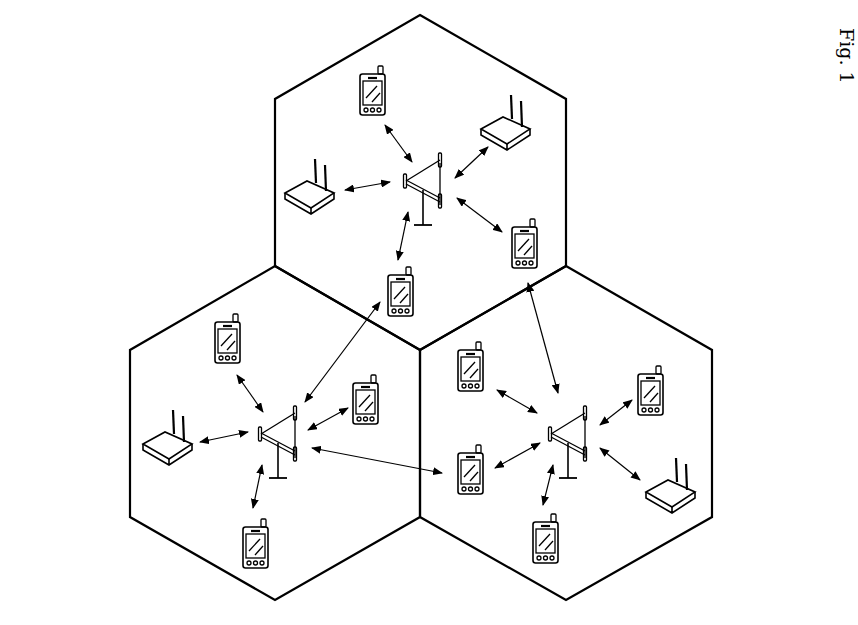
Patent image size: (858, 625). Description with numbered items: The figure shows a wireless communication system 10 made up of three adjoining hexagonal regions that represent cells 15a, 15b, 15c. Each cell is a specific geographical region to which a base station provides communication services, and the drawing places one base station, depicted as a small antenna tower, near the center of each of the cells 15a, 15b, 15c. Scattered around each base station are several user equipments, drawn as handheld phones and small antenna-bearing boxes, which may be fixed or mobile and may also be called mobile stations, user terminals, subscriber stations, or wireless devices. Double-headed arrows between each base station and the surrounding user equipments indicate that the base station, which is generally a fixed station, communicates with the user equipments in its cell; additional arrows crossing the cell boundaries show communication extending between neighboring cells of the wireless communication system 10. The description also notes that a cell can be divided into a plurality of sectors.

The wireless communication system 10 is at (627, 102).
The cell 15a is at (567, 172).
The cell 15b is at (656, 316).
The cell 15c is at (183, 318).